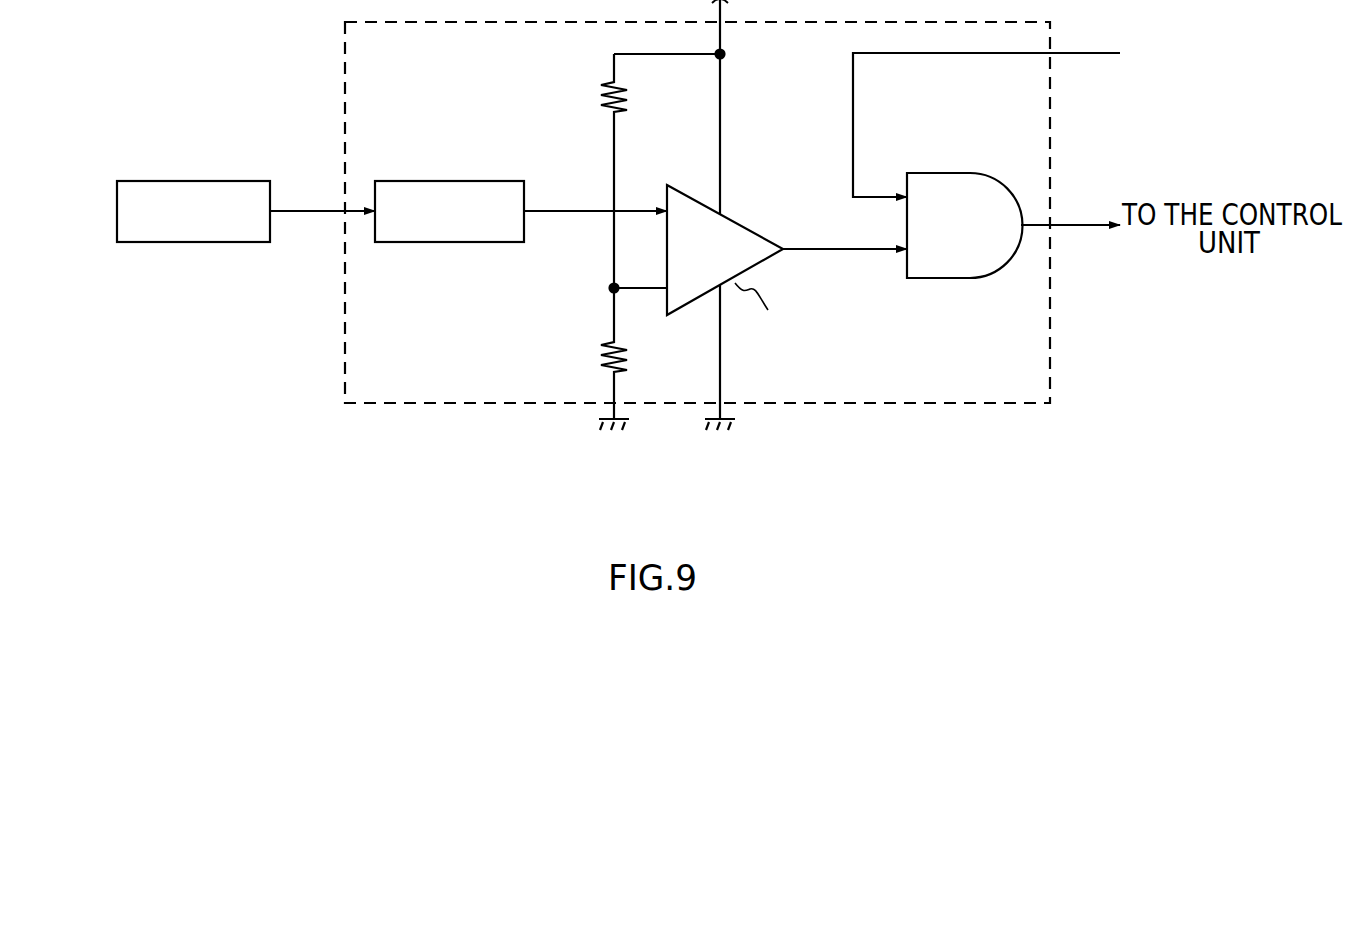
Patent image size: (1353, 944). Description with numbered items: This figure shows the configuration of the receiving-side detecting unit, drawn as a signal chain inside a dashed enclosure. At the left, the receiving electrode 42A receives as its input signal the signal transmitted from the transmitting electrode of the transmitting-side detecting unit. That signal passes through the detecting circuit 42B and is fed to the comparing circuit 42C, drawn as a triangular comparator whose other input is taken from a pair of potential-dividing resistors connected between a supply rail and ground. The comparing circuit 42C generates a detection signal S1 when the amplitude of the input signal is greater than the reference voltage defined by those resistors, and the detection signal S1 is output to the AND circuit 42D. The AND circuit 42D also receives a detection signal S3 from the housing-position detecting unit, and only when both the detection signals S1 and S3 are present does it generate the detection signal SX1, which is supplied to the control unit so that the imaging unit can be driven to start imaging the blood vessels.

The receiving electrode 42A is at (160, 181).
The detecting circuit 42B is at (430, 181).
The comparing circuit 42C is at (836, 271).
The AND circuit 42D is at (950, 173).
The detection signal S1 is at (850, 253).
The detection signal S3 is at (853, 70).
The detection signal SX1 is at (1085, 223).